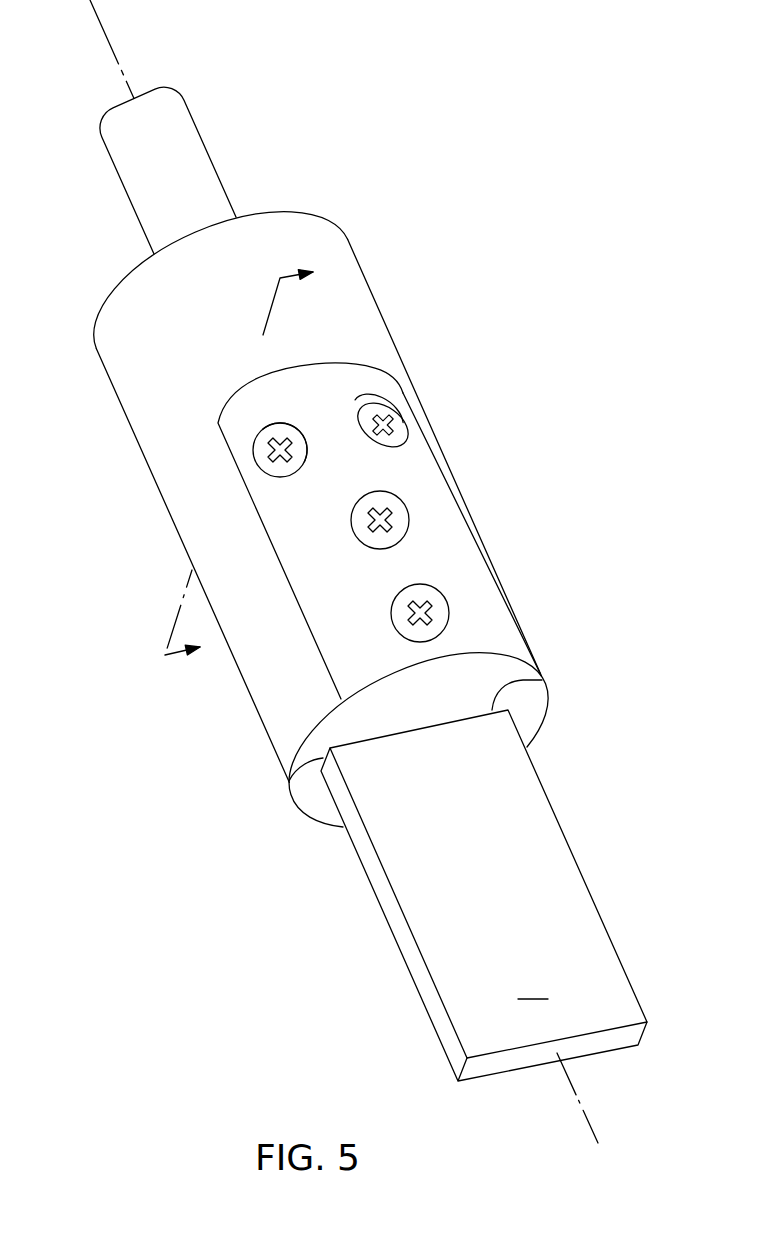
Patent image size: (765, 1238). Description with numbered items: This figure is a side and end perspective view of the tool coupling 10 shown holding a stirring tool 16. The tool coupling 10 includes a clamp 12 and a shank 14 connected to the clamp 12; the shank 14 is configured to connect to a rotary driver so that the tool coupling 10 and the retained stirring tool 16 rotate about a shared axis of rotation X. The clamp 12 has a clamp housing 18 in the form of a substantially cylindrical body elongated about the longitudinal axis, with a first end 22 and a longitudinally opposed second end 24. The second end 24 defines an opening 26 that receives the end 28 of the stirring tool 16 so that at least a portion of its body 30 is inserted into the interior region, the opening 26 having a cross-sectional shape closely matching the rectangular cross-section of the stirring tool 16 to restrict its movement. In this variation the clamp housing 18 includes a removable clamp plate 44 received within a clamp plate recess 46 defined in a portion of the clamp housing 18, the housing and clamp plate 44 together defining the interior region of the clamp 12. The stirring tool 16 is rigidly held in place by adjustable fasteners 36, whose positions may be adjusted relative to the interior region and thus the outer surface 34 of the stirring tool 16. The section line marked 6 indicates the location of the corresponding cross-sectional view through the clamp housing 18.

The tool coupling 10 is at (520, 220).
The clamp 12 is at (336, 532).
The shank 14 is at (205, 139).
The stirring tool 16 is at (484, 895).
The clamp housing 18 is at (178, 518).
The first end 22 is at (313, 207).
The second end 24 is at (407, 784).
The opening 26 is at (540, 680).
The end 28 is at (289, 782).
The body 30 is at (522, 808).
The outer surface 34 is at (534, 986).
The adjustable fastener 36 is at (378, 496).
The clamp plate 44 is at (445, 525).
The clamp plate recess 46 is at (433, 443).
The section line 6- 6 is at (253, 468).